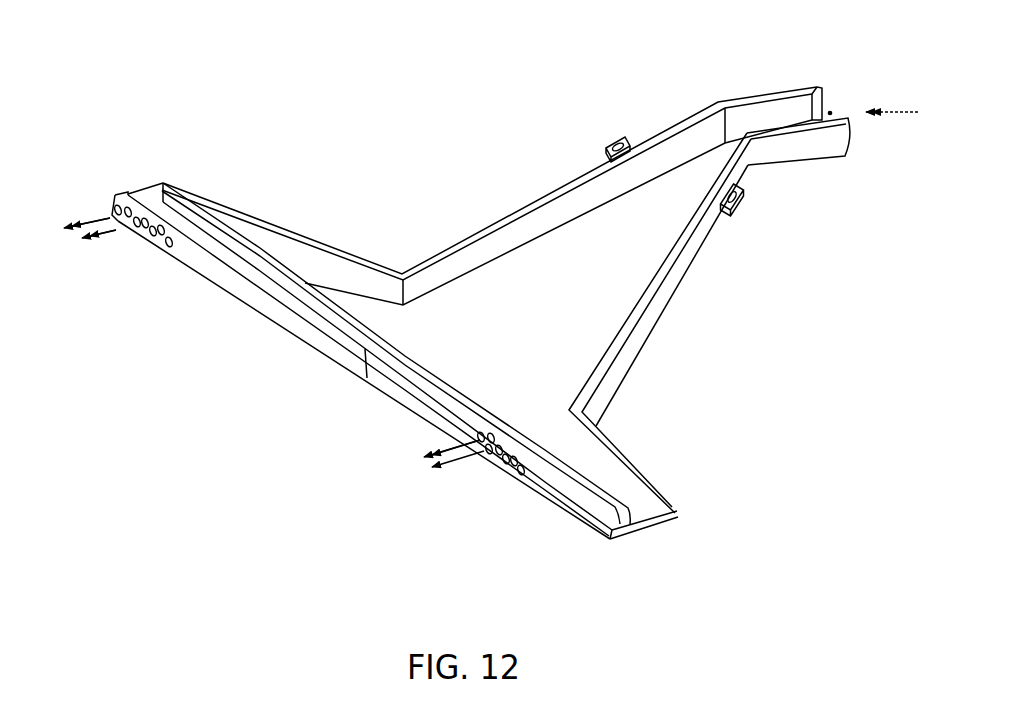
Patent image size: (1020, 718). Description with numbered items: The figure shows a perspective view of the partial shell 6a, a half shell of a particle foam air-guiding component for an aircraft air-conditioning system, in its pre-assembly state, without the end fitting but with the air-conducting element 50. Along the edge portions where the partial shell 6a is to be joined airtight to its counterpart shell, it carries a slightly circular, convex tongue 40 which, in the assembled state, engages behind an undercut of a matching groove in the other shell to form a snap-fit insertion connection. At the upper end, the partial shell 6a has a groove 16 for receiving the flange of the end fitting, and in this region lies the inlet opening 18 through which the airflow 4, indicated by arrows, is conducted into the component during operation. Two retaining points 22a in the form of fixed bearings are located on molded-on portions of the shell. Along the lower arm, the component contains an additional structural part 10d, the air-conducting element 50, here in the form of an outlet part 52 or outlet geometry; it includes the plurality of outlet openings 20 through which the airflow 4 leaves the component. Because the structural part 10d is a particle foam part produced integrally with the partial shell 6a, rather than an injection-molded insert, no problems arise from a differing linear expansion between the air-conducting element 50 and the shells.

The tongue 40 is at (362, 258).
The groove 16 is at (820, 88).
The inlet opening 18 is at (833, 111).
The partial shell 6a is at (790, 148).
The retaining point 22a is at (608, 132).
The structural part 10d is at (395, 361).
The air-conducting element 50 is at (395, 361).
The outlet part 52 is at (268, 303).
The outlet openings 20 is at (158, 245).
The airflow 4 is at (88, 224).